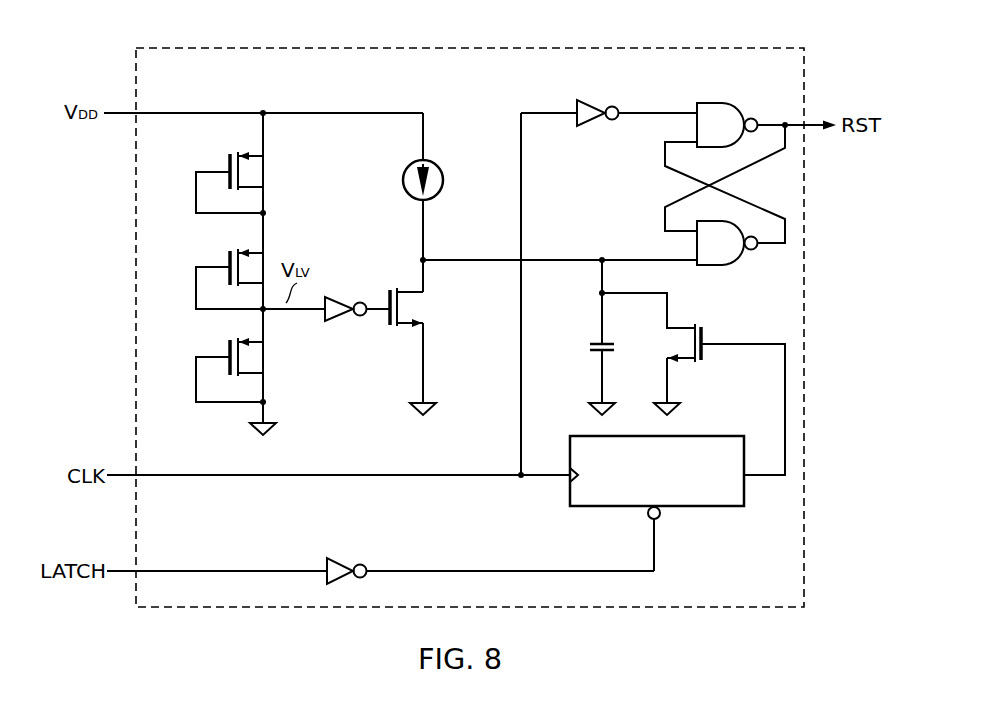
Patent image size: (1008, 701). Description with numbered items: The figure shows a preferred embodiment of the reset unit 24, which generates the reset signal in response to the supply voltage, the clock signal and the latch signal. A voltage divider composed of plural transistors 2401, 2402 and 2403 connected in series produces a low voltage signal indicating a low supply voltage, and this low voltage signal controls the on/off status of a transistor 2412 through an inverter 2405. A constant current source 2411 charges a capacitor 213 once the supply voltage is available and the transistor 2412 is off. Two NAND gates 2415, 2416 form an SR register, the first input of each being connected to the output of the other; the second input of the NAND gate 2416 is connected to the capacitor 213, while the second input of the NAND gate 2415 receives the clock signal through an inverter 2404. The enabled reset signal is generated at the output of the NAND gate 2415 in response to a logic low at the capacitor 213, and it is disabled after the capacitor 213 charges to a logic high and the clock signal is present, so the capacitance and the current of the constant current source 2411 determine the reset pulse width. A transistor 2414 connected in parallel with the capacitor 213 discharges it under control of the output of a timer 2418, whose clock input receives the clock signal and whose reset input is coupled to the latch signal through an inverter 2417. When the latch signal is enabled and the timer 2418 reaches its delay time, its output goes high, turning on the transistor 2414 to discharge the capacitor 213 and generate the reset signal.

The reset unit 24 is at (847, 14).
The capacitor 213 is at (588, 347).
The transistor 2401 is at (263, 170).
The transistor 2402 is at (220, 253).
The transistor 2403 is at (263, 357).
The inverter 2404 is at (592, 98).
The inverter 2405 is at (338, 294).
The constant current source 2411 is at (445, 183).
The transistor 2412 is at (427, 310).
The transistor 2414 is at (710, 360).
The NAND gate 2415 is at (713, 102).
The NAND gate 2416 is at (720, 268).
The inverter 2417 is at (340, 558).
The timer 2418 is at (713, 510).